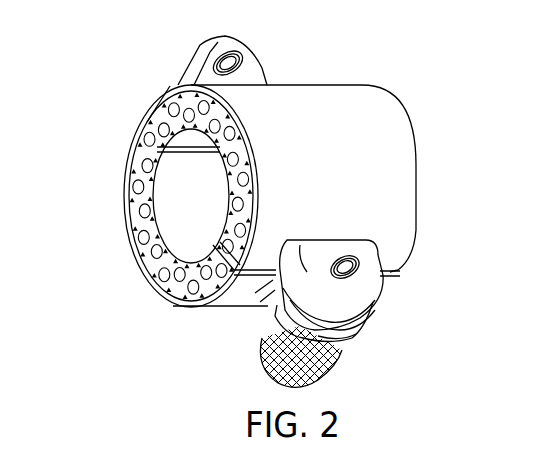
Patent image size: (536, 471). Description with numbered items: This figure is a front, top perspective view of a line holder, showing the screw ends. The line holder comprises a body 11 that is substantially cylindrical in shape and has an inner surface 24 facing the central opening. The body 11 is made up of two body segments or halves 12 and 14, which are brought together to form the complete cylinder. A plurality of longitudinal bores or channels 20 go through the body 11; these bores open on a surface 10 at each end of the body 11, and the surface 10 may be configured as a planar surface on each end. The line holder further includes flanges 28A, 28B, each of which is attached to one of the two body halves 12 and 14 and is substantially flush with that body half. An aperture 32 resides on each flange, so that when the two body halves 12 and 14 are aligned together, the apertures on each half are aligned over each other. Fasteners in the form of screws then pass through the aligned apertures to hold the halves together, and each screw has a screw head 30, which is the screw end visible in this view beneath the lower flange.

The surface 10 is at (235, 120).
The body 11 is at (122, 161).
The body half 12 is at (238, 300).
The body half 14 is at (385, 138).
The longitudinal bores 20 is at (160, 103).
The inner surface 24 is at (180, 200).
The flange 28A is at (348, 345).
The flange 28B is at (223, 48).
The screw head 30 is at (262, 366).
The aperture 32 is at (247, 68).